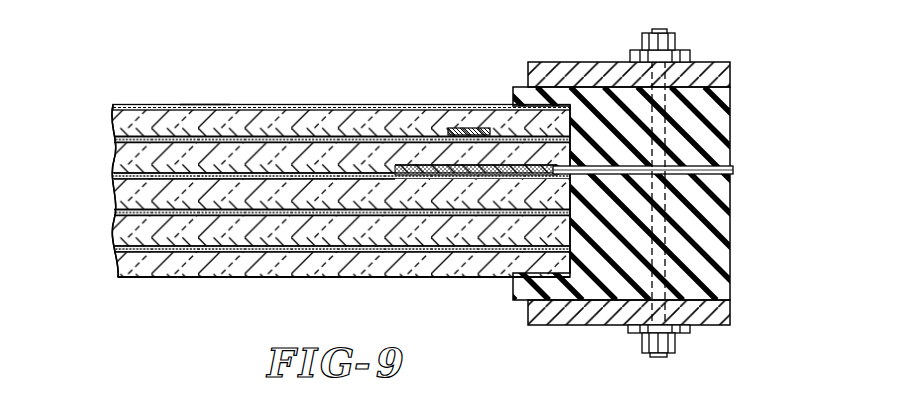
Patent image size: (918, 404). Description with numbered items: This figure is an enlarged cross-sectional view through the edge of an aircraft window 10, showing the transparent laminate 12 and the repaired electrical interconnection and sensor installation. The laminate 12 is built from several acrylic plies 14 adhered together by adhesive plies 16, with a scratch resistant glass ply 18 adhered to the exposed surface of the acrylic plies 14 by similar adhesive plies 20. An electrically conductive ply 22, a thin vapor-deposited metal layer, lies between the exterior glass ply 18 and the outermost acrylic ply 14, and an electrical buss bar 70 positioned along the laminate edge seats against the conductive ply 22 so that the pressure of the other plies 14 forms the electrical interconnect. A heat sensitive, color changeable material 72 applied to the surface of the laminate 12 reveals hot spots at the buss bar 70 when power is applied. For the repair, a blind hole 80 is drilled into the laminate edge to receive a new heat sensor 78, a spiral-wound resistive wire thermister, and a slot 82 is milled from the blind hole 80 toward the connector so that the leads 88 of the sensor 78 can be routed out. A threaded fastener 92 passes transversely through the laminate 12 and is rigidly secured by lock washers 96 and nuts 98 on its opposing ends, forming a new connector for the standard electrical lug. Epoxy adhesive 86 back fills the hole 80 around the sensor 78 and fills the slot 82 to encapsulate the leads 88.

The aircraft window 10 is at (308, 45).
The transparent laminate 12 is at (238, 101).
The acrylic plies 14 is at (126, 147).
The adhesive plies 16 is at (122, 170).
The scratch resistant ply 18 is at (318, 86).
The adhesive plies 20 is at (140, 123).
The electrically conductive ply 22 is at (113, 138).
The electrical buss bar 70 is at (468, 131).
The heat sensitive, color changeable material 72 is at (207, 87).
The heat sensor 78 is at (534, 157).
The blind hole 80 is at (413, 163).
The slot 82 is at (733, 165).
The epoxy adhesive 86 is at (435, 167).
The leads 88 is at (700, 170).
The threaded fastener 92 is at (647, 77).
The lock washers 96 is at (692, 58).
The nuts 98 is at (673, 44).